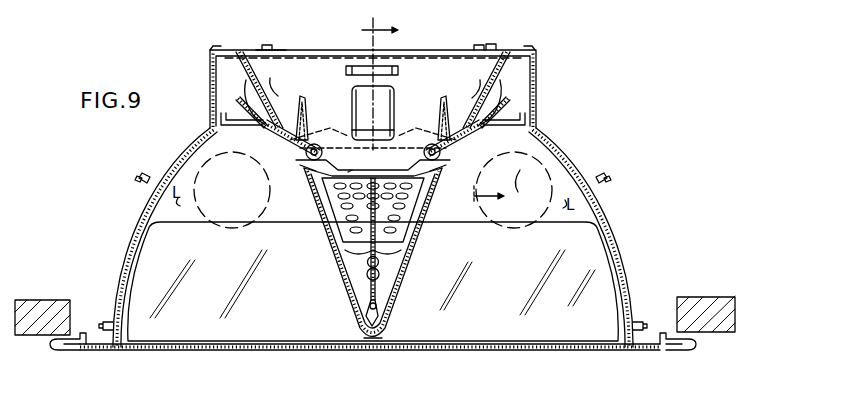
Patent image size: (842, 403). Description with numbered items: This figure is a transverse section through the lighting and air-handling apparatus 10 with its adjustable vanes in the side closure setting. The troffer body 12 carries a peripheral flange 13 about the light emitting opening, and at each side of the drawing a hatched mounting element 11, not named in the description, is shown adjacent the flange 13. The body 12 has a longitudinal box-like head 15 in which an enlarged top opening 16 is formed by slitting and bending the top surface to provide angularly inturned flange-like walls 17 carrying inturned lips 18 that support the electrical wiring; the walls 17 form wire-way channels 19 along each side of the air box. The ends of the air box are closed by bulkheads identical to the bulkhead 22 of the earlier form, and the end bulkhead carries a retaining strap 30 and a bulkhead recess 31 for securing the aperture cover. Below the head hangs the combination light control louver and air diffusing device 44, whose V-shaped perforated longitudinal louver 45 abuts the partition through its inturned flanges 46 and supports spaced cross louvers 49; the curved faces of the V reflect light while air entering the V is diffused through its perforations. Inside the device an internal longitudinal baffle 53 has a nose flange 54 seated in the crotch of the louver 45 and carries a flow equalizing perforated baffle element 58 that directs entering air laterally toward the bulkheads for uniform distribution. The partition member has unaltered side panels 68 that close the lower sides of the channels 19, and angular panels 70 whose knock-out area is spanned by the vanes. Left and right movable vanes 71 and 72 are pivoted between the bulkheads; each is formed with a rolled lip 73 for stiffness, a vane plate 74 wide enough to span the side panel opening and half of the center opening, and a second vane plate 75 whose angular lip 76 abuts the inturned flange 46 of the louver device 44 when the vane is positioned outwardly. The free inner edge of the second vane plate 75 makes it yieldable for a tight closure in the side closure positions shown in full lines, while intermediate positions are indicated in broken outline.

The apparatus 10 is at (443, 113).
The mounting blocks 11 is at (40, 300).
The troffer body 12 is at (608, 244).
The peripheral flange 13 is at (90, 364).
The box-like head 15 is at (212, 88).
The top opening 16 is at (505, 54).
The flange-like walls 17 is at (503, 58).
The inturned lips 18 is at (242, 107).
The channels 19 is at (222, 68).
The bulkhead 22 is at (278, 52).
The retaining strap 30 is at (358, 66).
The bulkhead recess 31 is at (376, 100).
The combination light control louver and air diffusing device 44 is at (434, 210).
The longitudinal louver 45 is at (366, 342).
The flanges 46 is at (373, 203).
The cross louvers 49 is at (354, 170).
The internal longitudinal baffle 53 is at (368, 283).
The nose flange 54 is at (380, 316).
The flow equalizing perforated baffle element 58 is at (396, 240).
The side panels 68 is at (528, 170).
The angular panels 70 is at (373, 81).
The vane 71 is at (279, 128).
The vane 72 is at (462, 128).
The rolled lip 73 is at (445, 145).
The vane plate 74 is at (303, 98).
The second vane plate 75 is at (270, 144).
The angular lip 76 is at (316, 146).